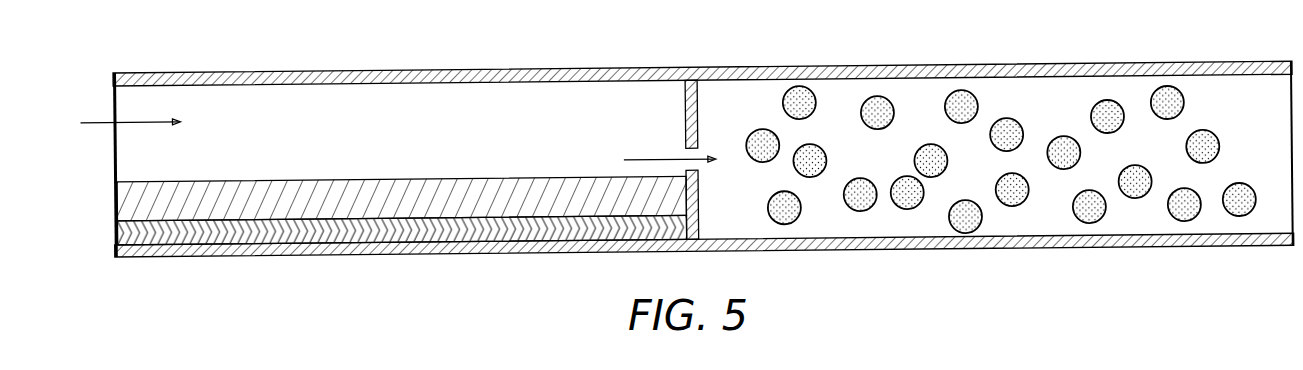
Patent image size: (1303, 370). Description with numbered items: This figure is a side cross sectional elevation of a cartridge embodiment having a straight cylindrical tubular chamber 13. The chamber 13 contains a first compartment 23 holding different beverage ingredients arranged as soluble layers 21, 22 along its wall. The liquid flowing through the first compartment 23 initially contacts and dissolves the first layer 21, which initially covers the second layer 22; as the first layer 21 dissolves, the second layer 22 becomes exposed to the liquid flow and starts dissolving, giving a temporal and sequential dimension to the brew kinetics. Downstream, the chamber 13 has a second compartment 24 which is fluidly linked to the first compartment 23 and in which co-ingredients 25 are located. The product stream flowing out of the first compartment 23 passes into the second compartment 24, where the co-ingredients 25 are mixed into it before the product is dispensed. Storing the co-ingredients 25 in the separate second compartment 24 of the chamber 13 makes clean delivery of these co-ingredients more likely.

The chamber 13 is at (1010, 64).
The first layer 21 is at (124, 199).
The second layer 22 is at (124, 233).
The first compartment 23 is at (520, 98).
The second compartment 24 is at (1020, 221).
The co-ingredients 25 is at (1185, 103).